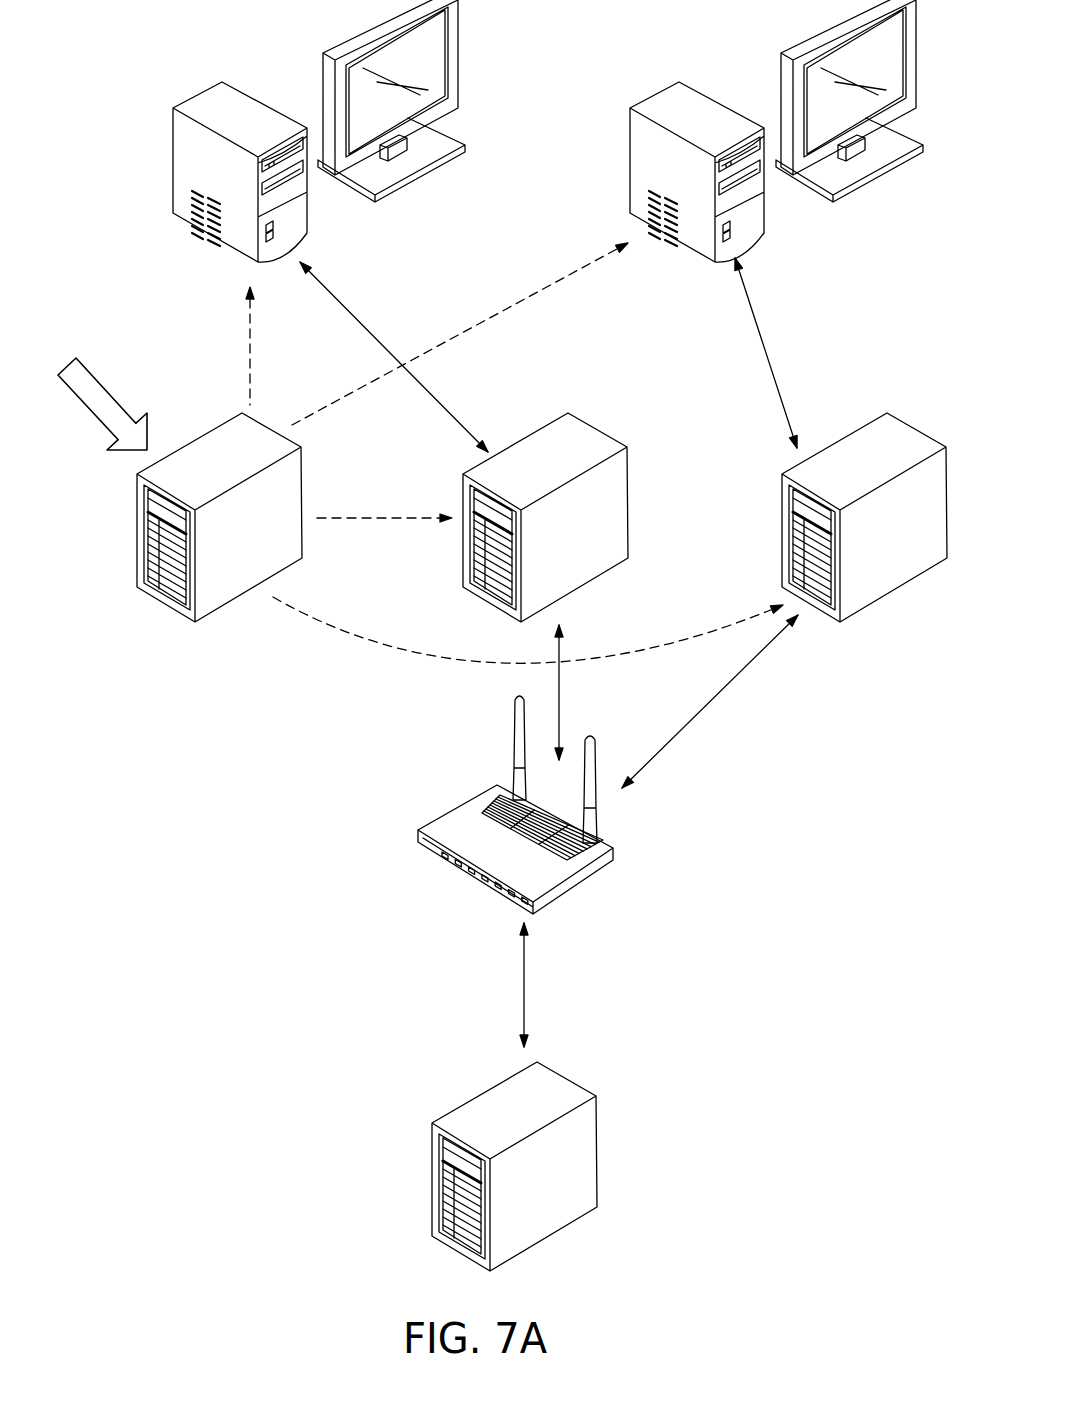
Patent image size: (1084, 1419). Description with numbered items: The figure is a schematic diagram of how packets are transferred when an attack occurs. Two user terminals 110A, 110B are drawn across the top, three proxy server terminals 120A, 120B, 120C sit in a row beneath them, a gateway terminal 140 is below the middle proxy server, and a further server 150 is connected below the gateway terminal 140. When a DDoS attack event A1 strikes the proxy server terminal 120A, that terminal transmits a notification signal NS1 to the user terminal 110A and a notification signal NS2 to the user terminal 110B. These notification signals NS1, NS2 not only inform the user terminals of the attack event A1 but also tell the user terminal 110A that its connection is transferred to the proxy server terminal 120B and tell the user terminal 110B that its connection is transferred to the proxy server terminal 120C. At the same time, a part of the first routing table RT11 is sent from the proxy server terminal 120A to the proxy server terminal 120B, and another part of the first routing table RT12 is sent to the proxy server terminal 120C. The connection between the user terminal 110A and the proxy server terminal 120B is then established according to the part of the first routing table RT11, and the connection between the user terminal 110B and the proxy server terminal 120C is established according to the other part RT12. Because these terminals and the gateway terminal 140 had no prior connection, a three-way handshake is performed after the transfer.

The user terminal 110A is at (193, 97).
The user terminal 110B is at (712, 97).
The proxy server terminal 120A is at (190, 444).
The proxy server terminal 120B is at (512, 443).
The proxy server terminal 120C is at (832, 443).
The gateway terminal 140 is at (603, 842).
The server 150 is at (597, 1150).
The DDoS attack event A1 is at (93, 380).
The notification signal NS1 is at (250, 320).
The notification signal NS2 is at (495, 317).
The part of the first routing table RT11 is at (370, 518).
The another part of the first routing table RT12 is at (352, 630).